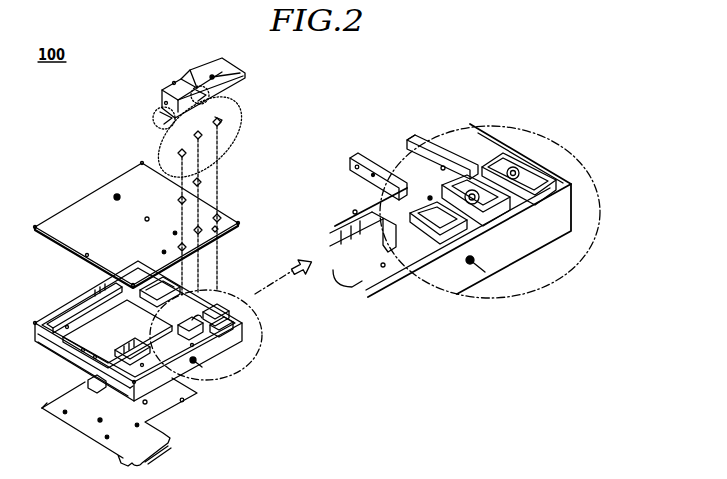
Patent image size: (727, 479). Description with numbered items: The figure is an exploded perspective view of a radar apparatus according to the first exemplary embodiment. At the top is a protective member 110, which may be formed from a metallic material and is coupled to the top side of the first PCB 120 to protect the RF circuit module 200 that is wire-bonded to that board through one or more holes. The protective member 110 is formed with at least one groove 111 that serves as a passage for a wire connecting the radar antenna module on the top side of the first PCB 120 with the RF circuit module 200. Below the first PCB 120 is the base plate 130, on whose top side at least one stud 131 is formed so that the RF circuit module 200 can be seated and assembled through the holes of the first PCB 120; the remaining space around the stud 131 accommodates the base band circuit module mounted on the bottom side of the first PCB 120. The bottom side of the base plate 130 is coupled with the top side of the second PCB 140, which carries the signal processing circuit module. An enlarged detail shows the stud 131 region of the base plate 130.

The protective member 110 is at (246, 76).
The groove 111 is at (196, 92).
The RF circuit module 200 is at (240, 113).
The first PCB 120 is at (240, 223).
The base plate 130 is at (258, 333).
The stud 131 is at (508, 204).
The second PCB 140 is at (176, 441).